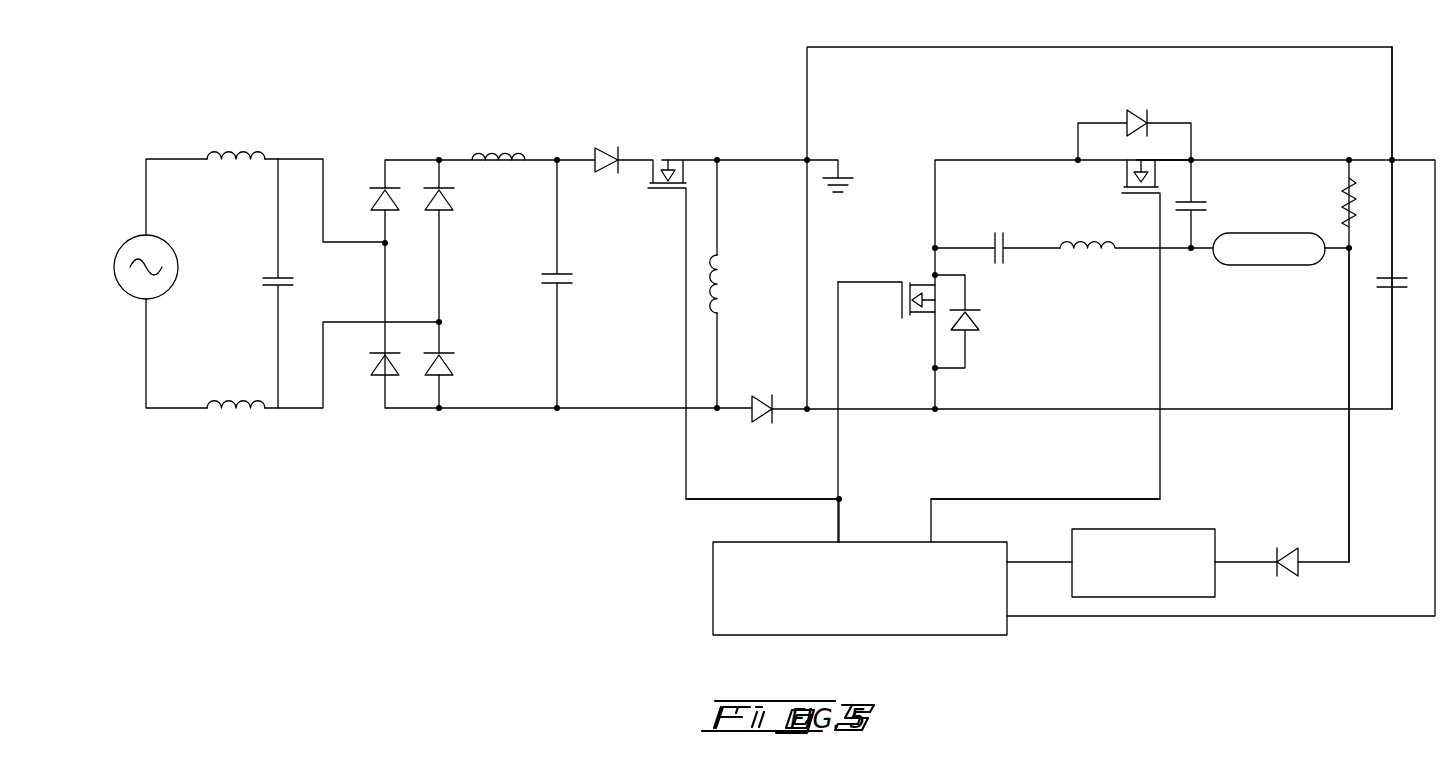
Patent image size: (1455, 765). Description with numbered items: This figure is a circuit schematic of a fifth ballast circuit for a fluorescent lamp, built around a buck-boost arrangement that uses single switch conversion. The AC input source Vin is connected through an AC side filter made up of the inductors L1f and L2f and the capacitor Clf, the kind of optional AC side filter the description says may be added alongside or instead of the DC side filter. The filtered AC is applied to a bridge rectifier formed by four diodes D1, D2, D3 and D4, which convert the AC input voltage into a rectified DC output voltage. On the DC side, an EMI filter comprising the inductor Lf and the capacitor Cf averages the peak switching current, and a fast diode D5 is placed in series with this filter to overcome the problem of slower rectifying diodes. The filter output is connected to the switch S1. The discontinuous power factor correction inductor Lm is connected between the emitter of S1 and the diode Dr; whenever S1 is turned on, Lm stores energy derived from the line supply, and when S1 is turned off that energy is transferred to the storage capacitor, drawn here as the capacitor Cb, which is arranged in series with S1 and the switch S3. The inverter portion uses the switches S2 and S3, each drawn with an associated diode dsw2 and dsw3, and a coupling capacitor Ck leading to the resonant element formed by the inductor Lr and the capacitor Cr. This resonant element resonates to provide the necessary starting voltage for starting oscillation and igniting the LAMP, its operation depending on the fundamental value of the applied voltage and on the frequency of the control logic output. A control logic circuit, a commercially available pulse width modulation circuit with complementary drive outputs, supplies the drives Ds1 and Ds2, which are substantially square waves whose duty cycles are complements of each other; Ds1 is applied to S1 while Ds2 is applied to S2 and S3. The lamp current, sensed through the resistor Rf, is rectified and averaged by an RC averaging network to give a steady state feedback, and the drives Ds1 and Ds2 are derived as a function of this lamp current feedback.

The AC input voltage source Vin is at (194, 286).
The first input filter inductor L1f is at (236, 140).
The second input filter inductor L2f is at (236, 423).
The input filter capacitor Clf is at (290, 283).
The bridge rectifier diode D1 is at (376, 215).
The bridge rectifier diode D2 is at (452, 215).
The bridge rectifier diode D3 is at (376, 379).
The bridge rectifier diode D4 is at (452, 379).
The EMI filter inductor Lf is at (498, 140).
The EMI filter capacitor Cf is at (574, 284).
The fast diode D5 is at (607, 144).
The switch S1 is at (654, 192).
The power factor correction inductor Lm is at (735, 283).
The diode Dr is at (771, 394).
The switch S2 is at (886, 284).
The antiparallel diode of switch S2 dsw2 is at (986, 321).
The drive output Ds1 is at (788, 487).
The drive output Ds2 is at (1045, 487).
The coupling capacitor Ck is at (997, 240).
The resonant inductor Lr is at (1136, 232).
The switch S3 is at (1139, 182).
The antiparallel diode of switch S3 dsw3 is at (1134, 120).
The resonant capacitor Cr is at (1201, 204).
The fluorescent lamp LAMP is at (1281, 249).
The feedback sensing resistor Rf is at (1365, 368).
The bus capacitor Cb is at (1403, 269).